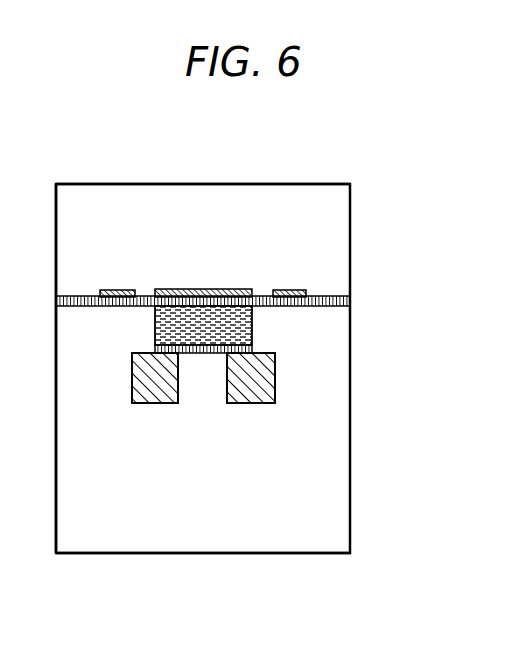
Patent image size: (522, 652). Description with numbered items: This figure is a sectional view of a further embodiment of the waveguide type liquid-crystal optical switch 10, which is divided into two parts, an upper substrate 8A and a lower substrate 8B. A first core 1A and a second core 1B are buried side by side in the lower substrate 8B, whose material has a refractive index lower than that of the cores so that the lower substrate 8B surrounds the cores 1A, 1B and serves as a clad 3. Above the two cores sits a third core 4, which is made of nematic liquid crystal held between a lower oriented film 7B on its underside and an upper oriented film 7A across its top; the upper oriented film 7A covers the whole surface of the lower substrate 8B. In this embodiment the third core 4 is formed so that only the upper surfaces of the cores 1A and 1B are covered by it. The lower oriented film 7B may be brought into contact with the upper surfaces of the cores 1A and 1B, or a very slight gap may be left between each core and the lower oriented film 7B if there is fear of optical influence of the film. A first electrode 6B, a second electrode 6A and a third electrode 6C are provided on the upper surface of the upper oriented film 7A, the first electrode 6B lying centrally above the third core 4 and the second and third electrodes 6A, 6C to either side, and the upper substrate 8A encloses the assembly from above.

The waveguide type liquid-crystal optical switch 10 is at (392, 175).
The upper substrate 8A is at (293, 200).
The lower substrate 8B is at (340, 542).
The clad 3 is at (71, 543).
The upper oriented film 7A is at (350, 299).
The second electrode 6A is at (122, 290).
The first electrode 6B is at (203, 289).
The third electrode 6C is at (290, 290).
The third core 4 is at (252, 323).
The lower oriented film 7B is at (204, 355).
The first core 1A is at (138, 367).
The second core 1B is at (273, 370).